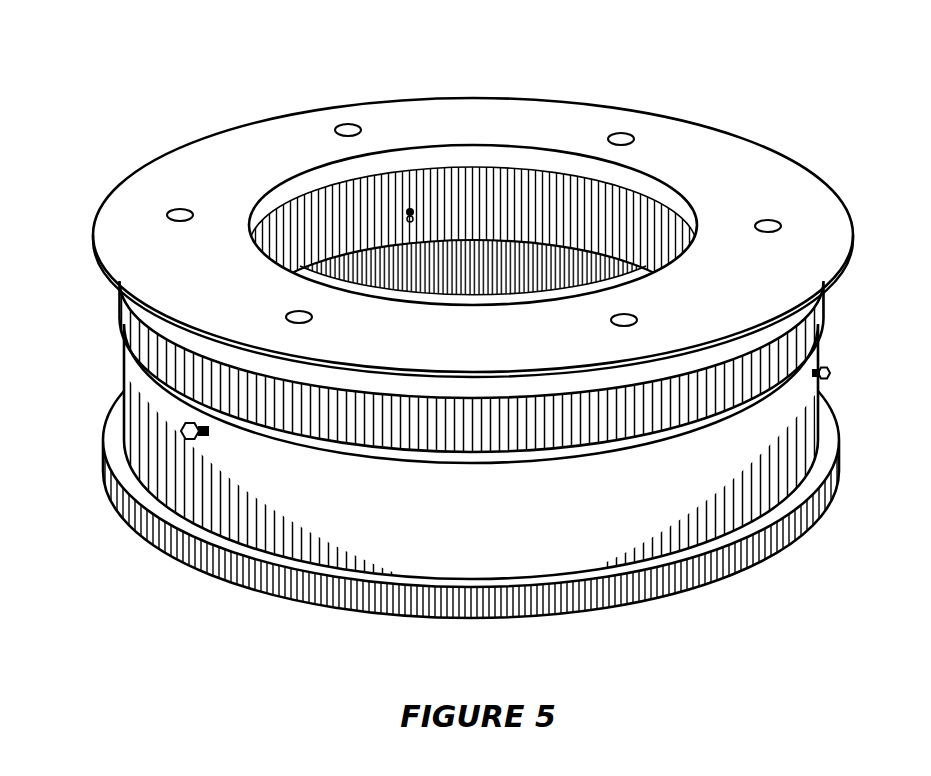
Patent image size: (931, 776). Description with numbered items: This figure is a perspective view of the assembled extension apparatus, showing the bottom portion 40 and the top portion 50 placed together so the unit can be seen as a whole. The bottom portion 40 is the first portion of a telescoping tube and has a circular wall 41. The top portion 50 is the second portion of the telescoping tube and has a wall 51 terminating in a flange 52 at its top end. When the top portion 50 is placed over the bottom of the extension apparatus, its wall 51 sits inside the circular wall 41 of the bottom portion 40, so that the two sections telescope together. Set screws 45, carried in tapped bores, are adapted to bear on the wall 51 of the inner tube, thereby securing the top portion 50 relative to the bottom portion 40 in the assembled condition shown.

The bottom portion 40 is at (703, 597).
The wall 41 is at (263, 491).
The set screws 45 is at (828, 366).
The top portion 50 is at (703, 116).
The wall 51 is at (180, 372).
The flange 52 is at (423, 115).